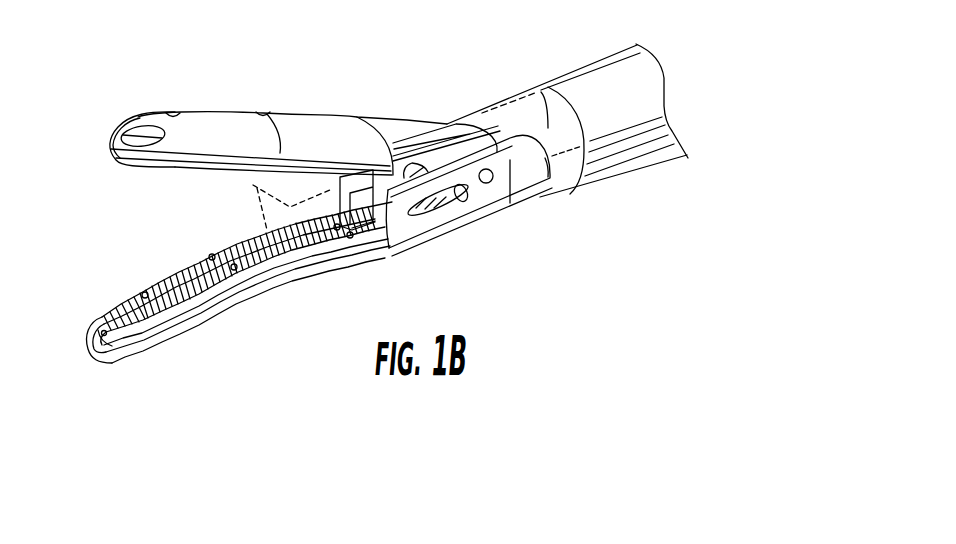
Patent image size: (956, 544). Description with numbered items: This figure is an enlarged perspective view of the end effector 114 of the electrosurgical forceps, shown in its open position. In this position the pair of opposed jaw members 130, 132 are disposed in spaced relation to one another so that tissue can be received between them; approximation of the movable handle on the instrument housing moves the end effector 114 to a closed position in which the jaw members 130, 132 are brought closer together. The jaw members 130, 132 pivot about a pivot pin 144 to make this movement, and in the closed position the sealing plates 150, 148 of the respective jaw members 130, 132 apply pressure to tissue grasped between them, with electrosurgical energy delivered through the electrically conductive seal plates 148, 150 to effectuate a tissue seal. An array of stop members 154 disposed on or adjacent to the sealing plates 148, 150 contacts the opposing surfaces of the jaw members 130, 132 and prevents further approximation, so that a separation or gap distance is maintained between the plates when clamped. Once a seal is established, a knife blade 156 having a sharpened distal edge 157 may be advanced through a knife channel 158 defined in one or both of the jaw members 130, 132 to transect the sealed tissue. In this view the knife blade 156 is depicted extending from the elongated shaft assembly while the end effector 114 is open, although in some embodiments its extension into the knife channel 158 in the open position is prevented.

The end effector 114 is at (283, 73).
The jaw member 130 is at (191, 104).
The jaw member 132 is at (148, 372).
The pivot pin 144 is at (491, 181).
The sealing plate 148 is at (108, 314).
The sealing plate 150 is at (133, 168).
The stop members 154 is at (209, 256).
The knife blade 156 is at (250, 187).
The sharpened distal edge 157 is at (260, 217).
The knife channel 158 is at (176, 314).